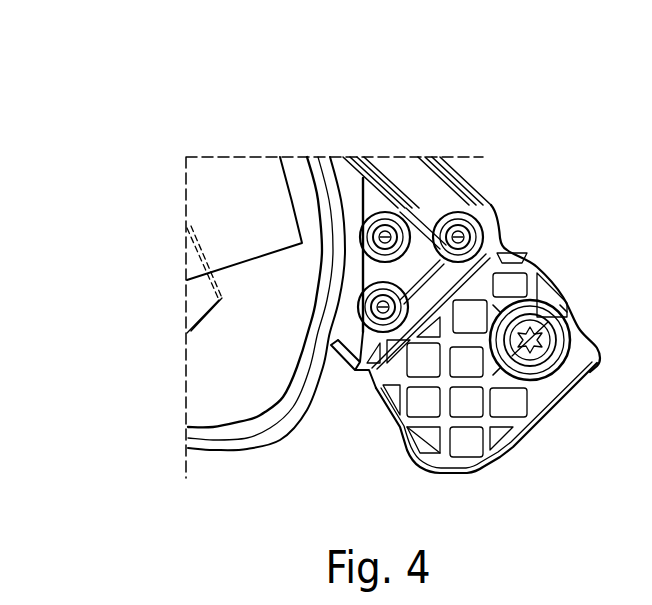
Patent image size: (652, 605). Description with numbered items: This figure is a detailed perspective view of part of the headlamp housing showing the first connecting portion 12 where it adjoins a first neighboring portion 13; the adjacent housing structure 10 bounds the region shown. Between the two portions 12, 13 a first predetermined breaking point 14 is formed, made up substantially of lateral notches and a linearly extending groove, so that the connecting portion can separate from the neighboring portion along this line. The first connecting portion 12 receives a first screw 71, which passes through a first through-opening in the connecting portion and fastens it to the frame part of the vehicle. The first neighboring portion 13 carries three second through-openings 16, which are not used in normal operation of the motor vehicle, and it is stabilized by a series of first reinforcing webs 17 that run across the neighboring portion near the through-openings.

The steering wheel rim 10 is at (252, 435).
The first connecting portion 12 is at (528, 458).
The first neighboring portion 13 is at (509, 193).
The first predetermined breaking point 14 is at (509, 239).
The second through-openings 16 is at (396, 220).
The first reinforcing webs 17 is at (378, 166).
The first screw 71 is at (543, 367).